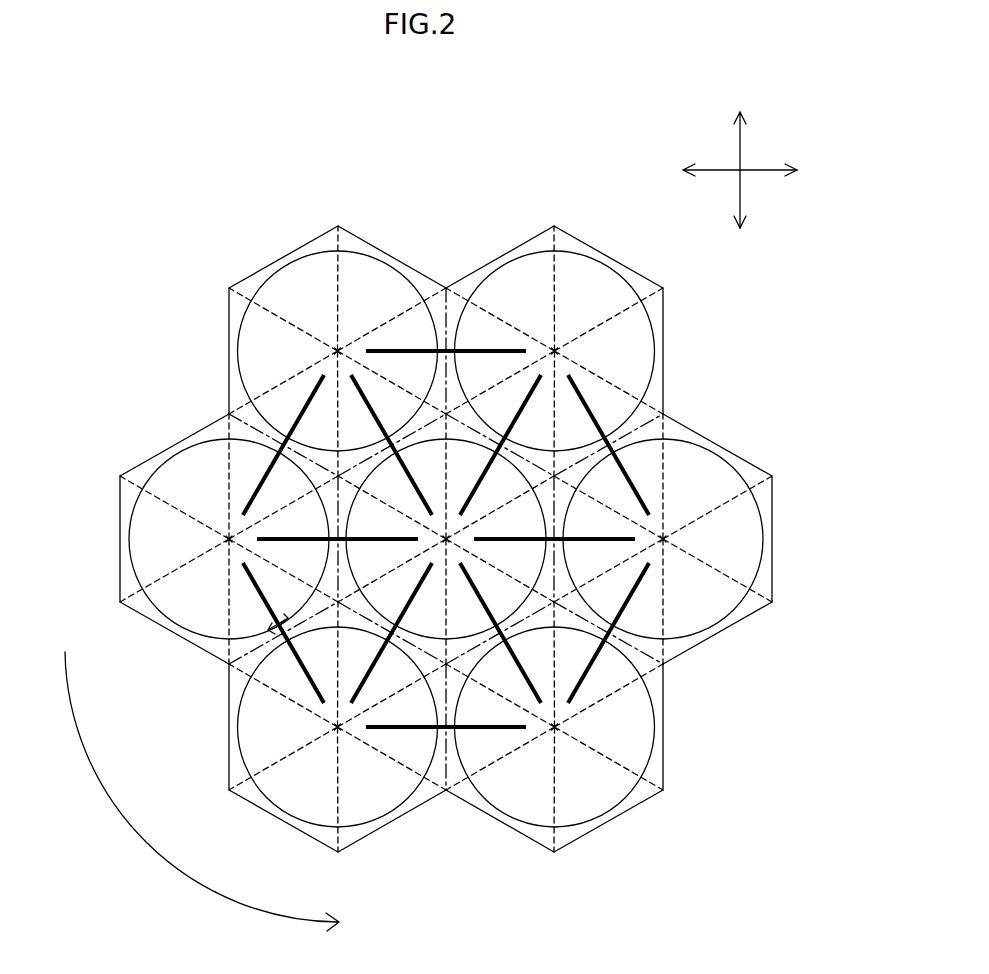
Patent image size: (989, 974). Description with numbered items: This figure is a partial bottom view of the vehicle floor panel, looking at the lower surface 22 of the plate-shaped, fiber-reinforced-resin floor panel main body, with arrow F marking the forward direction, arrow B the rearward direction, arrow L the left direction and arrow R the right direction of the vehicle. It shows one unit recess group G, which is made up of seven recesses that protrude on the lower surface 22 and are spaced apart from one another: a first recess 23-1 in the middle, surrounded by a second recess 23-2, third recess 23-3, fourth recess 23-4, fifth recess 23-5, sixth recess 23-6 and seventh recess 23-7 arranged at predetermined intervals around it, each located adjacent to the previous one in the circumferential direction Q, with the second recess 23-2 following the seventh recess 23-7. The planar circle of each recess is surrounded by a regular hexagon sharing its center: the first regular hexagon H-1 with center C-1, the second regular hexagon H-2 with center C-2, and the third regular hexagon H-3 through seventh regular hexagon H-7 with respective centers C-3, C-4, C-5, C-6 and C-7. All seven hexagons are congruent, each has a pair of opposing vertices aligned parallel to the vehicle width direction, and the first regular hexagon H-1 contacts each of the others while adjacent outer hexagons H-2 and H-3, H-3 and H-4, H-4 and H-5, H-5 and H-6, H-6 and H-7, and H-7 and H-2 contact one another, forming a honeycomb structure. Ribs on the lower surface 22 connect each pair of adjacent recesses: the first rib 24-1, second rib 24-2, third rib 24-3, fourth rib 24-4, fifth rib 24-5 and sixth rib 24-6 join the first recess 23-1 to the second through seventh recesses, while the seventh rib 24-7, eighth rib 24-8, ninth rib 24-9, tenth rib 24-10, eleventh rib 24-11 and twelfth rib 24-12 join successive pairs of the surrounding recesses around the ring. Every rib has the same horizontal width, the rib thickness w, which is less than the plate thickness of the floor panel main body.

The lower surface 22 is at (568, 147).
The unit recess group G is at (393, 219).
The first regular hexagon H-1 is at (360, 456).
The second regular hexagon H-2 is at (300, 238).
The third regular hexagon H-3 is at (118, 500).
The fourth regular hexagon H-4 is at (363, 836).
The fifth regular hexagon H-5 is at (603, 825).
The sixth regular hexagon H-6 is at (775, 532).
The seventh regular hexagon H-7 is at (605, 250).
The center of first regular hexagon C-1 is at (450, 540).
The center of second regular hexagon C-2 is at (342, 348).
The center of third regular hexagon C-3 is at (227, 540).
The center of fourth regular hexagon C-4 is at (339, 730).
The center of fifth regular hexagon C-5 is at (557, 732).
The center of sixth regular hexagon C-6 is at (667, 540).
The center of seventh regular hexagon C-7 is at (558, 348).
The first recess 23-1 is at (358, 512).
The second recess 23-2 is at (290, 296).
The third recess 23-3 is at (193, 470).
The fourth recess 23-4 is at (265, 730).
The fifth recess 23-5 is at (640, 752).
The sixth recess 23-6 is at (715, 600).
The seventh recess 23-7 is at (625, 338).
The first rib 24-1 is at (385, 423).
The second rib 24-2 is at (275, 542).
The third rib 24-3 is at (380, 650).
The fourth rib 24-4 is at (483, 603).
The fifth rib 24-5 is at (562, 603).
The sixth rib 24-6 is at (490, 468).
The seventh rib 24-7 is at (300, 413).
The eighth rib 24-8 is at (300, 662).
The ninth rib 24-9 is at (487, 730).
The tenth rib 24-10 is at (645, 700).
The eleventh rib 24-11 is at (590, 403).
The twelfth rib 24-12 is at (490, 350).
The rib thickness w is at (265, 628).
The circumferential direction Q is at (215, 794).
The right direction arrow R is at (738, 155).
The left direction arrow L is at (739, 236).
The rearward direction arrow B is at (729, 170).
The forward direction arrow F is at (798, 170).